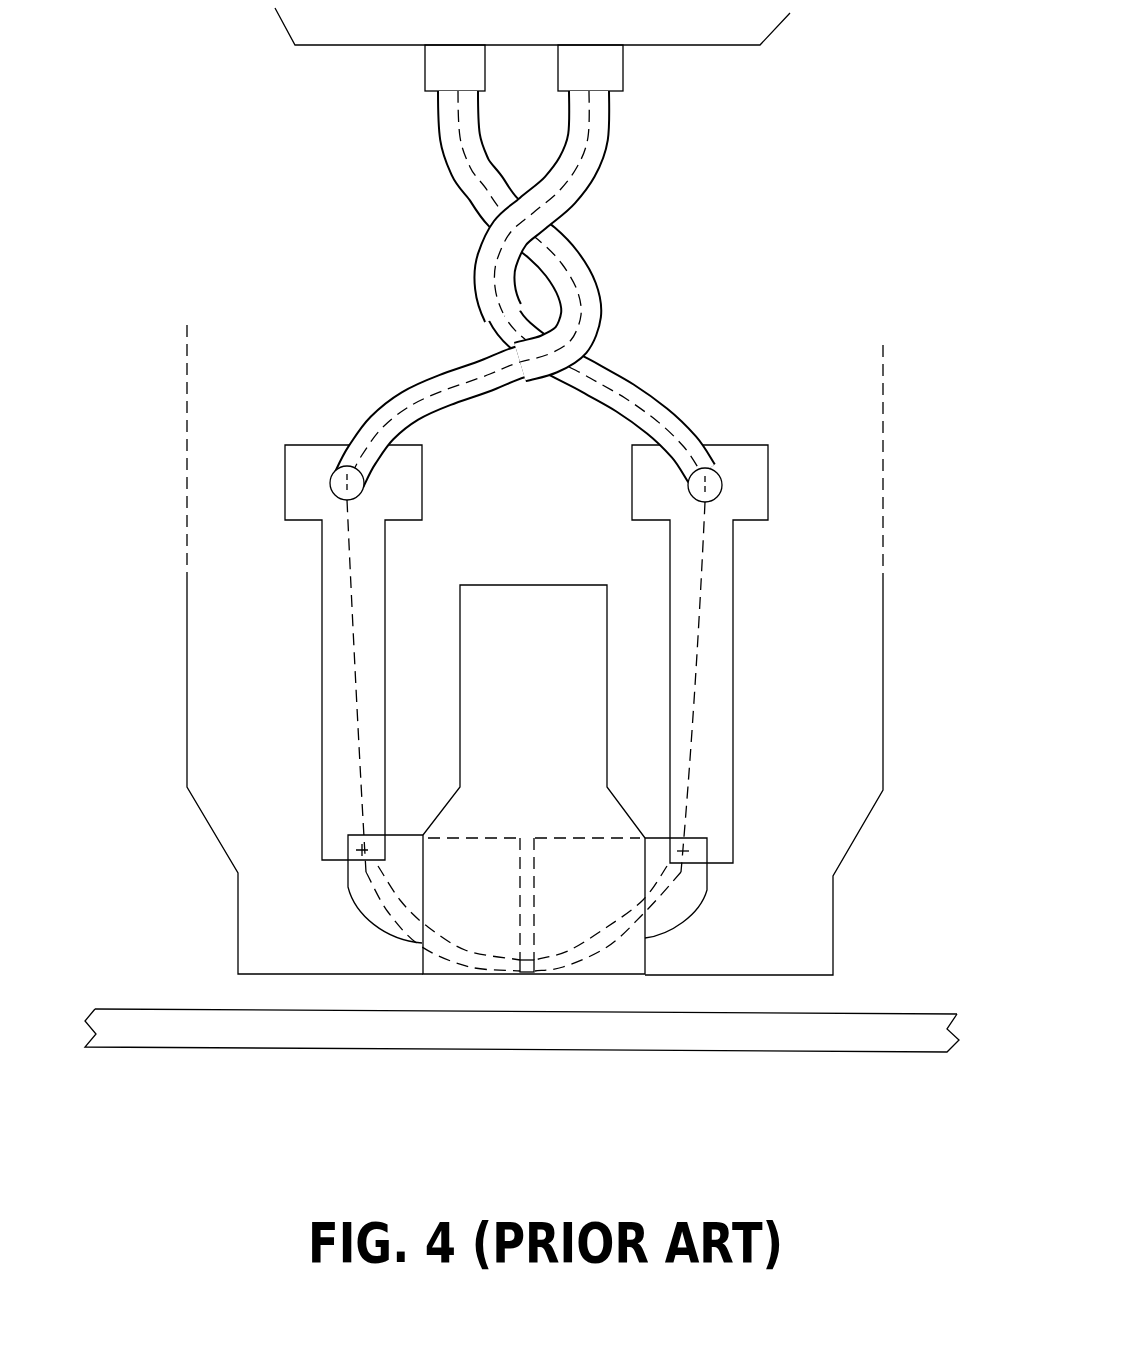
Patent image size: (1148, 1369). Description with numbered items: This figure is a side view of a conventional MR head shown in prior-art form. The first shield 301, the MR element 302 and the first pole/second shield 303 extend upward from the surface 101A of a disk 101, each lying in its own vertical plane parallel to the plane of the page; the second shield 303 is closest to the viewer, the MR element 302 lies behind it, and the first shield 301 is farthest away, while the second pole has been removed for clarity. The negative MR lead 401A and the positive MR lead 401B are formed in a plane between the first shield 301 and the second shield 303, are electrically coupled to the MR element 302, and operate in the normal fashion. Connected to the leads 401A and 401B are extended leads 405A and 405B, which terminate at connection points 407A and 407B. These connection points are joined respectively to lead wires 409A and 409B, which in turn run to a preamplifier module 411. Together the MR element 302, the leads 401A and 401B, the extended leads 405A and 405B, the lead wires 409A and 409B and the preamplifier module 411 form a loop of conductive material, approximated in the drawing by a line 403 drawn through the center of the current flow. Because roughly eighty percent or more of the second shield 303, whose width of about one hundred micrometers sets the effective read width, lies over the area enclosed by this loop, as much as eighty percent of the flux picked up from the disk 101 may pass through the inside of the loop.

The disk 101 is at (873, 1040).
The surface of the disk 101A is at (153, 1008).
The first shield 301 is at (875, 693).
The MR element 302 is at (528, 972).
The second shield 303 is at (592, 643).
The negative MR lead 401A is at (680, 897).
The positive MR lead 401B is at (370, 883).
The line through the center of the current flow 403 is at (536, 531).
The extended lead 405A is at (725, 656).
The extended lead 405B is at (343, 640).
The connection point 407A is at (710, 493).
The connection point 407B is at (333, 487).
The lead wire 409A is at (476, 300).
The lead wire 409B is at (599, 305).
The preamplifier module 411 is at (757, 25).